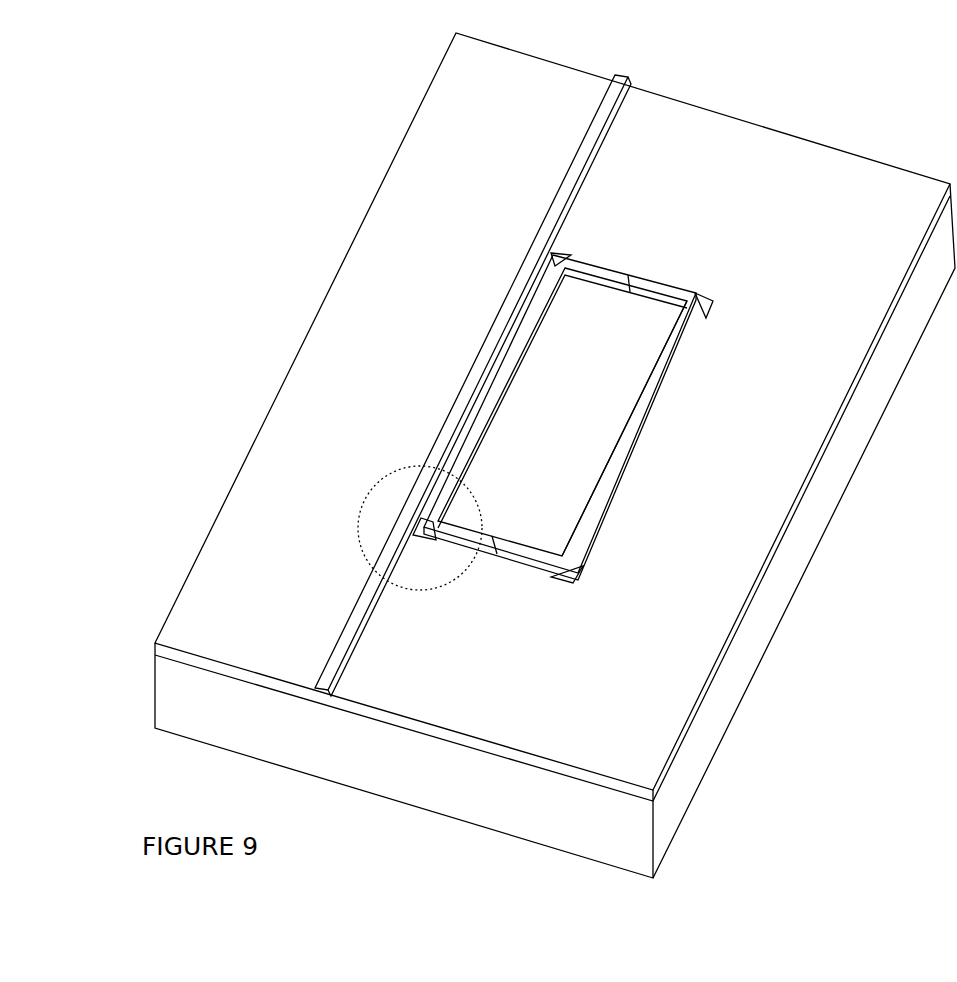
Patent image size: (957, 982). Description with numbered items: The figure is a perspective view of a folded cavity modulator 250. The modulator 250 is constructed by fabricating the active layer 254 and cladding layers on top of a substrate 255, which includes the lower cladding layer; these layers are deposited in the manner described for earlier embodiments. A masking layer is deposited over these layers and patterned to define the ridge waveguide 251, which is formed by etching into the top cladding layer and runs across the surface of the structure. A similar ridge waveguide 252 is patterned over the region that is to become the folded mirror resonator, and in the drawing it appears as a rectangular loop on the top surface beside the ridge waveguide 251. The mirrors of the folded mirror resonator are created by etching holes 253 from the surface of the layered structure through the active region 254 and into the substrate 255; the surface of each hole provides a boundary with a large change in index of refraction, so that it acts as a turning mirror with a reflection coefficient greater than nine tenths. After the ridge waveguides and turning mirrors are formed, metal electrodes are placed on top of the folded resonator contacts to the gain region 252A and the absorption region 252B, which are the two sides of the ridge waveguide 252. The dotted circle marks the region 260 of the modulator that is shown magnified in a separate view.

The folded cavity modulator 250 is at (248, 241).
The ridge waveguide 251 is at (603, 128).
The ridge waveguide 252 is at (657, 387).
The gain region 252A is at (507, 377).
The absorption region 252B is at (594, 504).
The holes 253 is at (705, 297).
The active layer 254 is at (580, 774).
The substrate 255 is at (673, 802).
The region 260 is at (384, 500).